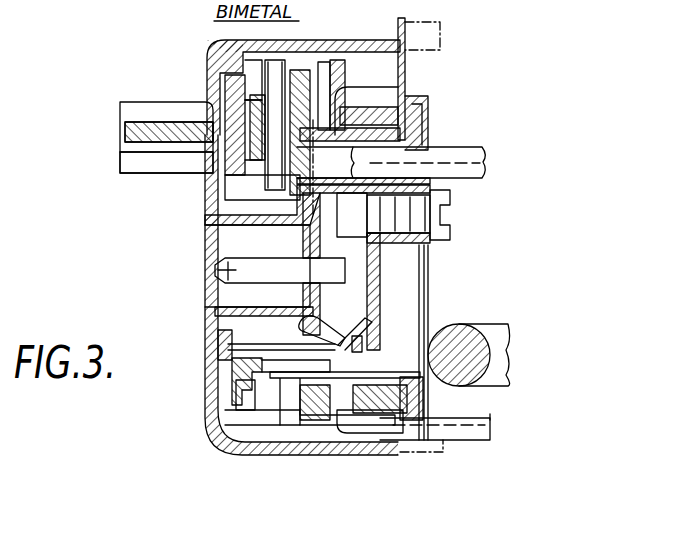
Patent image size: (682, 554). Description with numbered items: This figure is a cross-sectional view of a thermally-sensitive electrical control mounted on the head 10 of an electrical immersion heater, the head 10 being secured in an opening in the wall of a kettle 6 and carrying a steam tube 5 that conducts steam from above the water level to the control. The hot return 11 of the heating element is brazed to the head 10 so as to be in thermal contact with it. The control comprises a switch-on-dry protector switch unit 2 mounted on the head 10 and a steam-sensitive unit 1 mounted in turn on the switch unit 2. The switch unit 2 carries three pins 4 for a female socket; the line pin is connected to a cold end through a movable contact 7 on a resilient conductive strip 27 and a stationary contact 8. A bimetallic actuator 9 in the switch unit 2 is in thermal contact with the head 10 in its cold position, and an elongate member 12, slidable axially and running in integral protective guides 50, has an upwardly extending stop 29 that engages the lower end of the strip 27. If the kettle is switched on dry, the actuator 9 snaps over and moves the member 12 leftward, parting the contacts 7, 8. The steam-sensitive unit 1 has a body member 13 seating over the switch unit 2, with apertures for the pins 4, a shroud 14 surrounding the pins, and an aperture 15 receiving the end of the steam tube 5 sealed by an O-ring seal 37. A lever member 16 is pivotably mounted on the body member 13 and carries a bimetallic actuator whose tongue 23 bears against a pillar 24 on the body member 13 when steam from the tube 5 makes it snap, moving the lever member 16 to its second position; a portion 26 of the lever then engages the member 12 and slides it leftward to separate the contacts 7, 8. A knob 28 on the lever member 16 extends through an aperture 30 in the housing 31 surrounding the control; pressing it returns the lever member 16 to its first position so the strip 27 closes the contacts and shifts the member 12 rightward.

The steam-sensitive unit 1 is at (228, 38).
The switch-on-dry protector switch unit 2 is at (385, 257).
The pins 4 is at (215, 268).
The steam tube 5 is at (447, 153).
The kettle 6 is at (407, 78).
The movable contact 7 is at (352, 338).
The stationary contact 8 is at (365, 348).
The bimetallic actuator 9 is at (428, 303).
The head 10 is at (414, 122).
The hot return 11 is at (494, 336).
The elongate member 12 is at (290, 395).
The body member 13 is at (300, 120).
The shroud 14 is at (205, 228).
The aperture 15 is at (330, 168).
The lever member 16 is at (258, 402).
The tongue 23 is at (212, 148).
The pillar 24 is at (300, 238).
The portion of the lever 26 is at (243, 378).
The resilient conductive strip 27 is at (322, 330).
The knob 28 is at (133, 141).
The stop 29 is at (337, 330).
The aperture 30 is at (135, 173).
The housing 31 is at (245, 438).
The O-ring seal 37 is at (320, 125).
The protective guides 50 is at (305, 350).